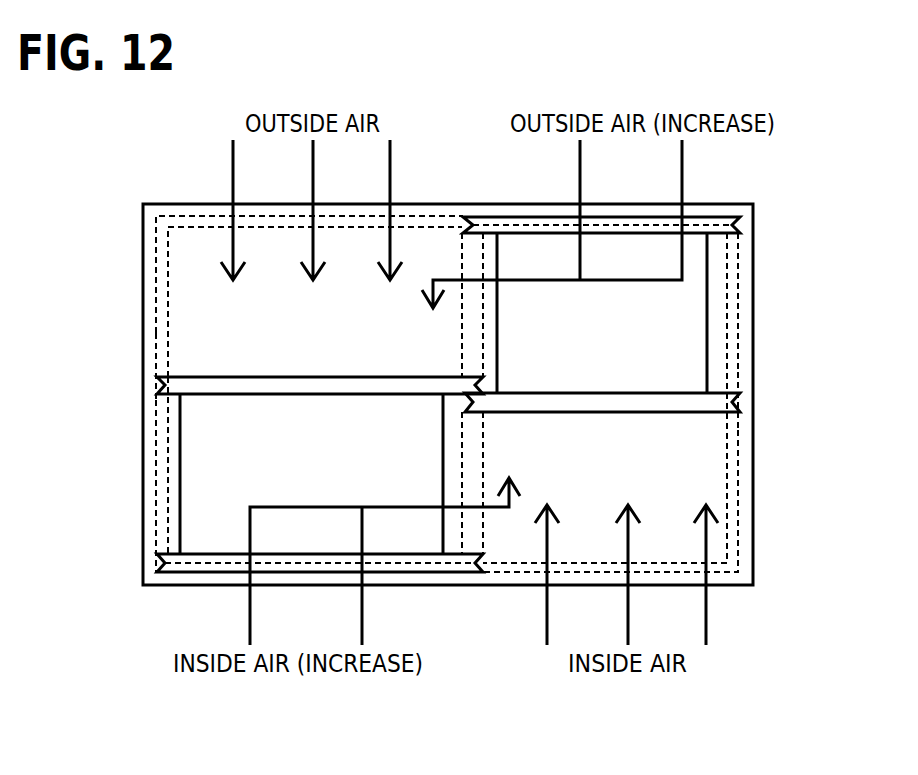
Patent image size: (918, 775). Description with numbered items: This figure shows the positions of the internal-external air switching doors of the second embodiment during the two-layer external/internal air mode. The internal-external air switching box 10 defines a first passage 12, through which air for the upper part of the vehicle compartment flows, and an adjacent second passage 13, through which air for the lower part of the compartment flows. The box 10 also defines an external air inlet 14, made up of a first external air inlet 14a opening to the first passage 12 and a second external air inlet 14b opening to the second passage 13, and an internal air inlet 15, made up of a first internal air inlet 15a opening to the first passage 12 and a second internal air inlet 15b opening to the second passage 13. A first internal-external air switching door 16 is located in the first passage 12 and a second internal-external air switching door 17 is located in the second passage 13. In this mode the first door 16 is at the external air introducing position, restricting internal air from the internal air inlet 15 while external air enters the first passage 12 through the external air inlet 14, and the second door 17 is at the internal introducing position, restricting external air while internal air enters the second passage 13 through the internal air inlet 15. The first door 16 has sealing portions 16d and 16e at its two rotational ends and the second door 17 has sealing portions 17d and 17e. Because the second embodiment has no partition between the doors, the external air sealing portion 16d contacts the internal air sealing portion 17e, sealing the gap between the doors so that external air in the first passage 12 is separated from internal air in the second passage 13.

The internal-external air switching box 10 is at (178, 204).
The first passage 12 is at (168, 292).
The second passage 13 is at (727, 268).
The external air inlet 14 is at (738, 314).
The first external air inlet 14a is at (156, 333).
The second external air inlet 14b is at (740, 372).
The internal air inlet 15 is at (740, 490).
The first internal air inlet 15a is at (156, 500).
The second internal air inlet 15b is at (740, 530).
The first internal-external air switching door 16 is at (180, 465).
The external air sealing portion 16d is at (158, 386).
The sealing portion 16e is at (158, 564).
The second internal-external air switching door 17 is at (708, 335).
The sealing portion 17d is at (737, 225).
The internal air sealing portion 17e is at (738, 403).